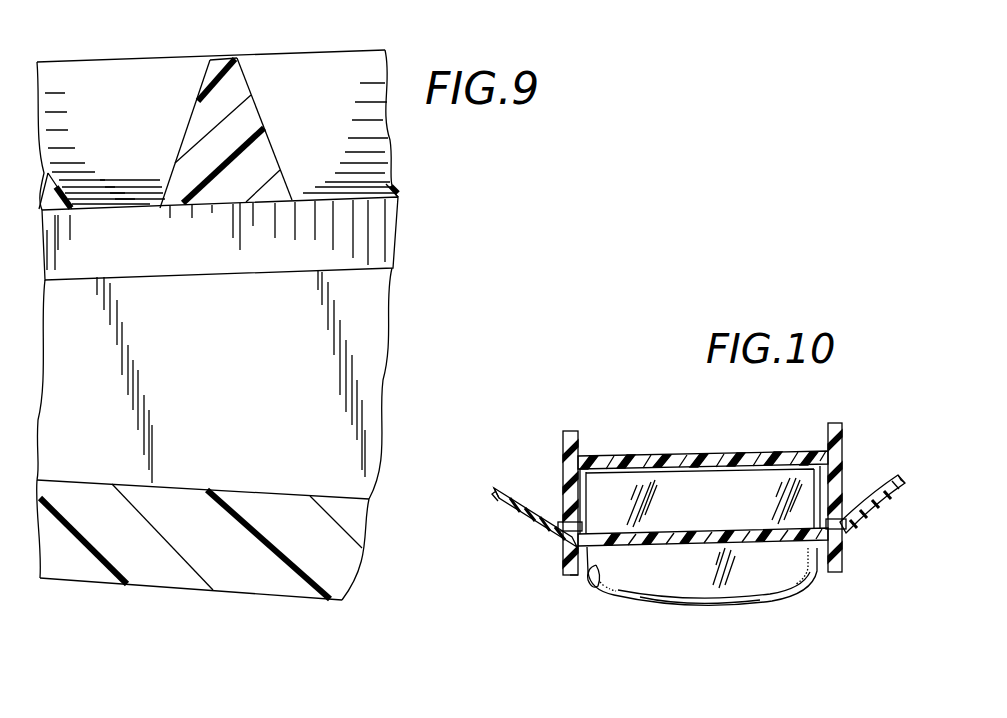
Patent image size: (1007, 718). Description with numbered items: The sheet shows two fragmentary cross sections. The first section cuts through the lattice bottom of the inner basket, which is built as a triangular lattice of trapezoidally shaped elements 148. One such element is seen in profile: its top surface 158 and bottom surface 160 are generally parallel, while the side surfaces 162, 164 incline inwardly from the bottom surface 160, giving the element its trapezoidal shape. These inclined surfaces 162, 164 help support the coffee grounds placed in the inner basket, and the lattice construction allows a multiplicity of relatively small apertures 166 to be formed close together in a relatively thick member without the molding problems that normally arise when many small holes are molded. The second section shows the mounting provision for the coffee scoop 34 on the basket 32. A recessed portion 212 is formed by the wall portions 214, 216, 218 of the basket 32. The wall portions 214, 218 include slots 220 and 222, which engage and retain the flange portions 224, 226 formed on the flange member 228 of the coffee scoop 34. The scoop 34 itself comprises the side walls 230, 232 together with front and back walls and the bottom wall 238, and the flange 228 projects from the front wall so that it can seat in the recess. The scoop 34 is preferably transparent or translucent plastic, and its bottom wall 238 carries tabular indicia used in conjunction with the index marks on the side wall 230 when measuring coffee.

In FIG. 9, the trapezoidally shaped lattice element 148 is at (213, 197).
In FIG. 9, the top surface 158 is at (227, 57).
In FIG. 9, the bottom surface 160 is at (243, 196).
In FIG. 9, the inclined side surface 162 is at (184, 135).
In FIG. 9, the inclined side surface 164 is at (259, 112).
In FIG. 9, the aperture 166 is at (131, 202).
In FIG. 10, the recessed portion 212 is at (580, 578).
In FIG. 10, the wall portion 214 is at (573, 510).
In FIG. 10, the wall portion 216 is at (635, 455).
In FIG. 10, the wall portion 218 is at (842, 480).
In FIG. 10, the slot 220 is at (567, 512).
In FIG. 10, the slot 222 is at (845, 516).
In FIG. 10, the flange portion 224 is at (557, 530).
In FIG. 10, the flange portion 226 is at (847, 530).
In FIG. 10, the flange member 228 is at (665, 547).
In FIG. 10, the side wall 230 is at (593, 584).
In FIG. 10, the side wall 232 is at (813, 557).
In FIG. 10, the bottom wall 238 is at (713, 597).
In FIG. 10, the coffee scoop 34 is at (775, 597).
In FIG. 10, the basket 32 is at (890, 503).